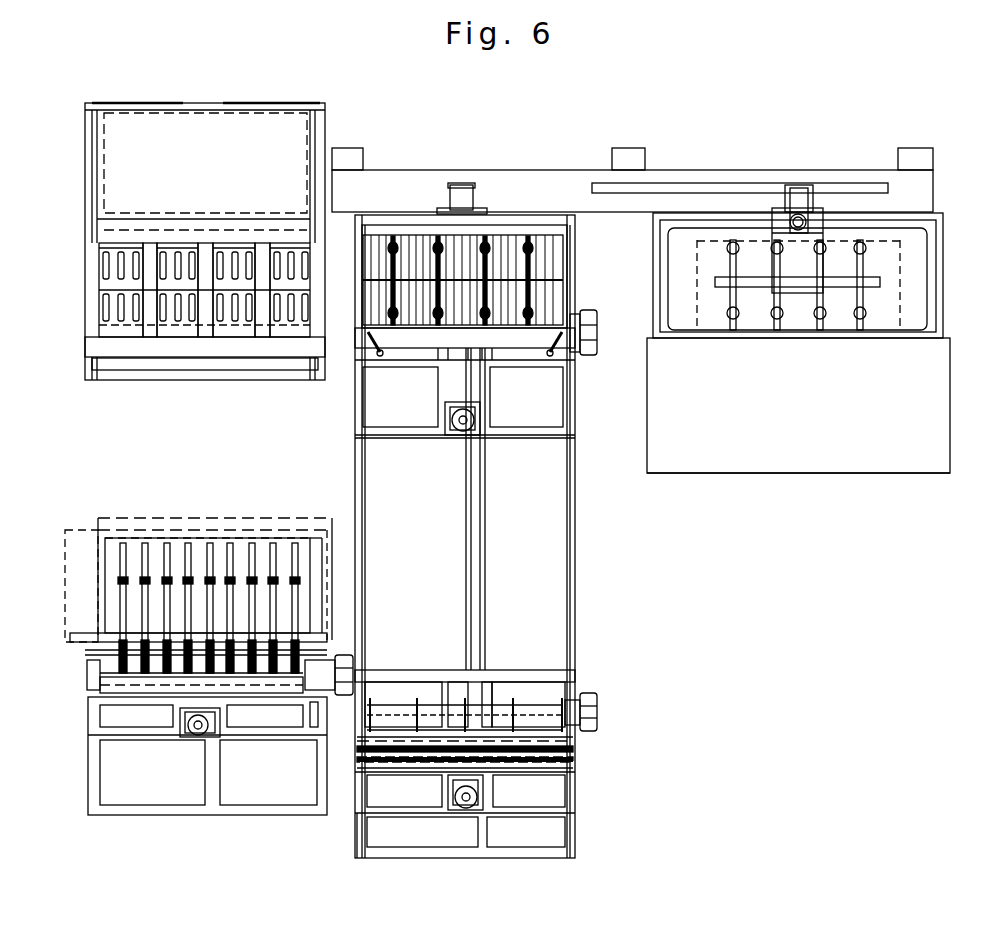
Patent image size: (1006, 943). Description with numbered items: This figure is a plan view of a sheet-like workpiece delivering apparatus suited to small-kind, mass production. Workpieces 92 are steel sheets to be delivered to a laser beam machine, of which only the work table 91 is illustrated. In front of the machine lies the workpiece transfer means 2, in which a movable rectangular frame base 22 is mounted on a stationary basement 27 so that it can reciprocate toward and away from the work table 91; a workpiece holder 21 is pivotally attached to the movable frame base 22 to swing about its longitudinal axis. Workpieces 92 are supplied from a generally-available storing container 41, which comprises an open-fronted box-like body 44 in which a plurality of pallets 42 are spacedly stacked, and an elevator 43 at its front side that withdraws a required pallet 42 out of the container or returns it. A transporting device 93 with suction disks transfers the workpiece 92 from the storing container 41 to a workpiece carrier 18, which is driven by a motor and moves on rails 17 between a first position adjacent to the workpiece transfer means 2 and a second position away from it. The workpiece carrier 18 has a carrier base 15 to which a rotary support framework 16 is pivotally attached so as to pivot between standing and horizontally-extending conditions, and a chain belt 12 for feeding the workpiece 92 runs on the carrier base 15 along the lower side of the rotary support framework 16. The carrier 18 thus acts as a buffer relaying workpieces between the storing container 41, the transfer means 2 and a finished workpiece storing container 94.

The workpiece transfer means 2 is at (87, 720).
The chain belt 12 is at (440, 317).
The carrier base 15 is at (572, 403).
The rotary support framework 16 is at (348, 213).
The rails 17 is at (357, 455).
The workpiece carrier 18 is at (528, 209).
The workpiece holder 21 is at (229, 545).
The movable frame base 22 is at (138, 733).
The stationary basement 27 is at (94, 818).
The storing container 41 is at (716, 479).
The pallet 42 is at (850, 272).
The elevator 43 is at (915, 310).
The box-like body 44 is at (877, 432).
The work table 91 is at (314, 530).
The workpiece 92 is at (280, 118).
The transporting device 93 is at (802, 184).
The finished workpiece storing container 94 is at (158, 102).